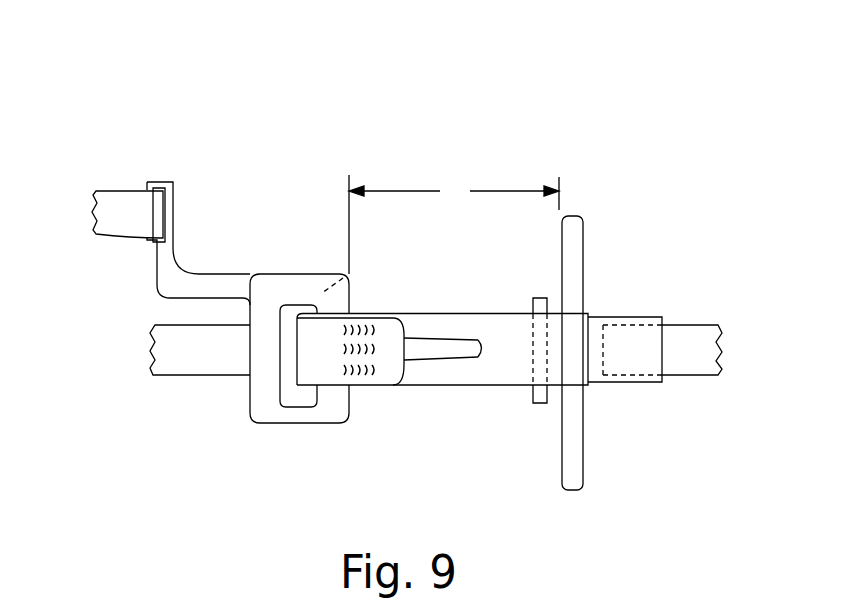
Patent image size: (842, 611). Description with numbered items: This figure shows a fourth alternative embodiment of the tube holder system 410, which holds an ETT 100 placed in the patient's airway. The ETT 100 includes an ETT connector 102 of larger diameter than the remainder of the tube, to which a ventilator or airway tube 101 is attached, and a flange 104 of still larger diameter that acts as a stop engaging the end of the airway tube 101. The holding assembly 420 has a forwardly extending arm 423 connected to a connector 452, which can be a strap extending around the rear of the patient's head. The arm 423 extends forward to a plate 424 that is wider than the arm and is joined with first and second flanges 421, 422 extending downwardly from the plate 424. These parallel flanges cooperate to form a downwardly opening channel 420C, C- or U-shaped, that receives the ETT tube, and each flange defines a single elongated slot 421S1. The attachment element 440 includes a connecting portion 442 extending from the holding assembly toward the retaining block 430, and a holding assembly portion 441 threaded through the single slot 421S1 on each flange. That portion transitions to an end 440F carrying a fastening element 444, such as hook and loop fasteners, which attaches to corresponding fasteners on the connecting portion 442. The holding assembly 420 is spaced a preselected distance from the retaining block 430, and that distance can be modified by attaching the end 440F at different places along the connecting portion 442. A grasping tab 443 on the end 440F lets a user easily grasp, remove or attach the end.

The tube holder system 410 is at (493, 83).
The holding assembly 420 is at (212, 221).
The forwardly extending arm 423 is at (163, 268).
The plate 424 is at (267, 282).
The first flange 421 is at (337, 299).
The second flange 422 is at (343, 278).
The single slot 421S1 is at (303, 406).
The connector 452 is at (128, 200).
The ETT 100 is at (190, 365).
The attachment element 440 is at (442, 328).
The holding assembly portion 441 is at (297, 365).
The fastening element 444 is at (360, 352).
The end 440F is at (382, 332).
The connecting portion 442 is at (480, 380).
The grasping tab 443 is at (483, 352).
The downwardly opening channel 420C is at (353, 397).
The flange 104 is at (545, 404).
The retaining block 430 is at (570, 216).
The ETT connector 102 is at (602, 381).
The airway tube 101 is at (683, 328).